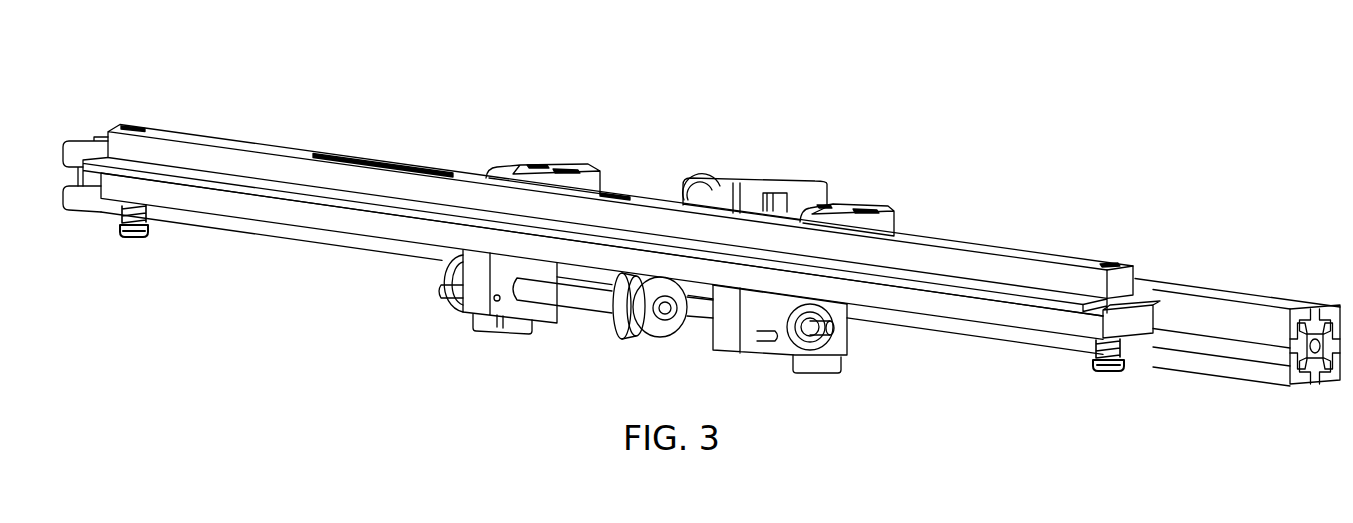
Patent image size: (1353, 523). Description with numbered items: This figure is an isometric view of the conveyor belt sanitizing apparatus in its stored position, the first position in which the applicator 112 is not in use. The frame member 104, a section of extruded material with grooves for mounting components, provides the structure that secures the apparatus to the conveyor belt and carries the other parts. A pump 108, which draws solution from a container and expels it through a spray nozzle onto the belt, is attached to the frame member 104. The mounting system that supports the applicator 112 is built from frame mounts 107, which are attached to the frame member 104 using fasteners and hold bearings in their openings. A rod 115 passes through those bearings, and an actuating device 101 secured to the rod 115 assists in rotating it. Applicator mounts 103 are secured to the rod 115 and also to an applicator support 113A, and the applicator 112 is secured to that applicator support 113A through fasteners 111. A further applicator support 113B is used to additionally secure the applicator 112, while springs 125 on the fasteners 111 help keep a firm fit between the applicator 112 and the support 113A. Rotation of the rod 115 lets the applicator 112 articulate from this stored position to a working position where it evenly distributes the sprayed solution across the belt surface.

The actuating device 101 is at (640, 333).
The applicator mounts 103 is at (213, 157).
The frame member 104 is at (1235, 310).
The frame mounts 107 is at (515, 170).
The pump 108 is at (752, 185).
The fasteners 111 is at (133, 240).
The applicator 112 is at (1022, 300).
The applicator support 113A is at (1137, 330).
The applicator support 113B is at (1125, 282).
The rod 115 is at (580, 300).
The springs 125 is at (1125, 372).